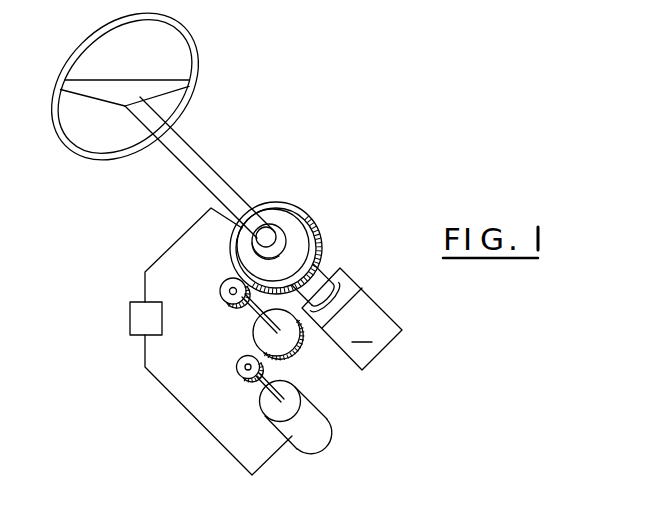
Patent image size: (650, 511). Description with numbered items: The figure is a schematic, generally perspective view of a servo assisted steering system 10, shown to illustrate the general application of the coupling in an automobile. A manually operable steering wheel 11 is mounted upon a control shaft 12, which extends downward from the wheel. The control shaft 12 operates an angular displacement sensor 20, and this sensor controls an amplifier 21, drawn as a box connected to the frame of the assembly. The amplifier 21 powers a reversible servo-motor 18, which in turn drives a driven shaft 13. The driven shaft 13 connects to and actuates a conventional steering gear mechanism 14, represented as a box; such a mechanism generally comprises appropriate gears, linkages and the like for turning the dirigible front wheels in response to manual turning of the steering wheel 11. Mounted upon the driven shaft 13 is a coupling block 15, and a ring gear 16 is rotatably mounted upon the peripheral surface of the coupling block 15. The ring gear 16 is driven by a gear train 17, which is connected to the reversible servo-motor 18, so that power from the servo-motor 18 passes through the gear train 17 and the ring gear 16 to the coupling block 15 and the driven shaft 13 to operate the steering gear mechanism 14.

The servo assisted steering system 10 is at (388, 102).
The steering wheel 11 is at (197, 43).
The control shaft 12 is at (223, 167).
The driven shaft 13 is at (328, 271).
The steering gear mechanism 14 is at (352, 319).
The coupling block 15 is at (308, 222).
The ring gear 16 is at (323, 248).
The gear train 17 is at (242, 312).
The servo-motor 18 is at (327, 421).
The angular displacement sensor 20 is at (287, 223).
The amplifier 21 is at (130, 312).